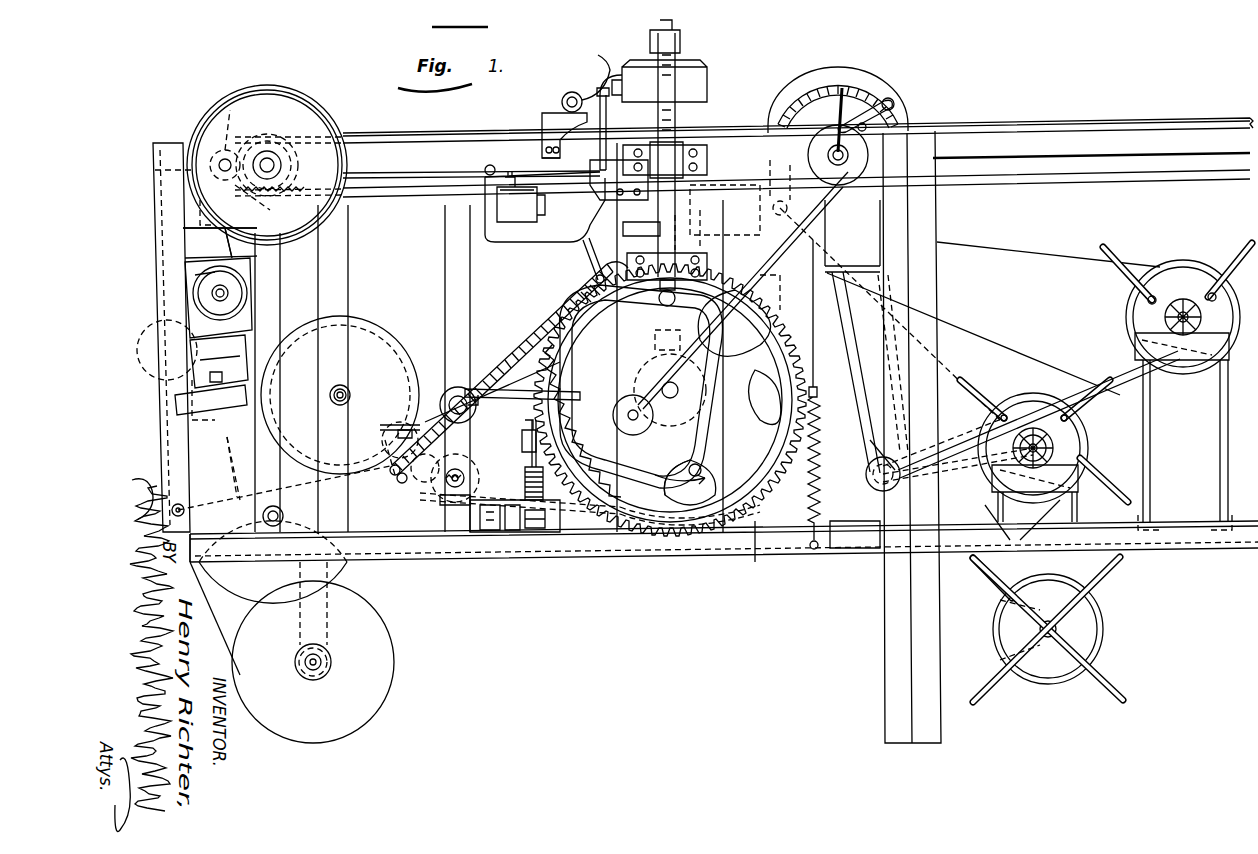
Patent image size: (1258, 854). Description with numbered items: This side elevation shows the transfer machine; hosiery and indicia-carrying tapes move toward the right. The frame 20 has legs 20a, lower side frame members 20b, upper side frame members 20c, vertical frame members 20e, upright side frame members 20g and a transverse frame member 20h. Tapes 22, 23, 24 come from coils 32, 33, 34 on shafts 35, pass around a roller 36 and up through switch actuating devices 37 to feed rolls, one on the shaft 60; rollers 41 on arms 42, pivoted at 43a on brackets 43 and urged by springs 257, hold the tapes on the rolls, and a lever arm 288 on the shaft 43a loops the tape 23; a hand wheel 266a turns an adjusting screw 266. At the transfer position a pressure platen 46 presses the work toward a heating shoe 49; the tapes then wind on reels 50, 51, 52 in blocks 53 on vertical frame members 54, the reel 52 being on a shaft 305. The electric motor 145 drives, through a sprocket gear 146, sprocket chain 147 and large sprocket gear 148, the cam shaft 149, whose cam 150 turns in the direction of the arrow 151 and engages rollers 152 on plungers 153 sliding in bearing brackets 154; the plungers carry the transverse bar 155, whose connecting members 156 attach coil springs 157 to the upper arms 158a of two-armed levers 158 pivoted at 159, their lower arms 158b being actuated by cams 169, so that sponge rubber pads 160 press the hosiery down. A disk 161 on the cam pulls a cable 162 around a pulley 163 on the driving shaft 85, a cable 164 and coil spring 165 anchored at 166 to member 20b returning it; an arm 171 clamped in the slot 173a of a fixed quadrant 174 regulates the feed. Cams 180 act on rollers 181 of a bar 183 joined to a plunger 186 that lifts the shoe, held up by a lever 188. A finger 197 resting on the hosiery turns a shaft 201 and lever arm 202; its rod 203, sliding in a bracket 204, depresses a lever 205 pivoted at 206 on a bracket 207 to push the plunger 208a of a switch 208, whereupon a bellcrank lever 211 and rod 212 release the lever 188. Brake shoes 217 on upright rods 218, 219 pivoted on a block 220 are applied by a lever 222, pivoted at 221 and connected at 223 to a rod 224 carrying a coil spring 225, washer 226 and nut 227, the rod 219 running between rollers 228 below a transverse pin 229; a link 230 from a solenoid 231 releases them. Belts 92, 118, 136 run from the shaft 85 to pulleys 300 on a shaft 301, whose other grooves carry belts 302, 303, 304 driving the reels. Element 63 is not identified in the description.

The frame 20 is at (616, 568).
The legs 20a is at (900, 683).
The lower longitudinal side frame members 20b is at (757, 565).
The upper longitudinal side frame members 20c is at (400, 212).
The vertical frame members 20e is at (352, 305).
The upright side frame members 20g is at (728, 545).
The transverse frame member 20h is at (778, 215).
The tape 22 is at (222, 632).
The tape 23 is at (232, 475).
The tape 24 is at (255, 540).
The coil 32 is at (395, 663).
The coil 33 is at (400, 368).
The coil 34 is at (342, 565).
The rotatable shafts 35 is at (350, 392).
The roller 36 is at (190, 510).
The switch actuating devices 37 is at (221, 357).
The rollers 41 is at (203, 128).
The arms 42 is at (155, 170).
The brackets 43 is at (205, 205).
The pivot shaft 43a is at (200, 225).
The pressure platen 46 is at (625, 67).
The heating shoe 49 is at (760, 185).
The reel 50 is at (1102, 628).
The reel 51 is at (1078, 445).
The reel 52 is at (1128, 305).
The bearing blocks 53 is at (1190, 362).
The vertical frame members 54 is at (1083, 490).
The shaft 60 is at (267, 150).
The pulley 63 is at (318, 118).
The driving shaft 85 is at (835, 150).
The belt 92 is at (867, 363).
The belt 118 is at (862, 440).
The belt 136 is at (860, 455).
The electric motor 145 is at (420, 480).
The sprocket gear 146 is at (500, 530).
The endless sprocket chain 147 is at (532, 356).
The large sprocket gear 148 is at (770, 355).
The cam shaft 149 is at (765, 393).
The cam 150 is at (548, 335).
The arrow 151 is at (680, 469).
The rollers 152 is at (690, 345).
The plungers 153 is at (678, 120).
The bearing brackets 154 is at (685, 148).
The transverse bar 155 is at (680, 45).
The connecting members 156 is at (708, 72).
The coil springs 157 is at (658, 118).
The two-armed levers 158 is at (539, 366).
The upper arms 158a is at (600, 272).
The lower arms 158b is at (660, 512).
The pivot 159 is at (452, 392).
The sponge rubber pads 160 is at (615, 85).
The disk 161 is at (650, 380).
The cable 162 is at (805, 225).
The pulley 163 is at (808, 155).
The cable 164 is at (745, 290).
The coil spring 165 is at (806, 482).
The spring attachment point 166 is at (813, 549).
The cams 169 is at (730, 395).
The arm 171 is at (895, 100).
The slot 173a is at (842, 85).
The fixed quadrant 174 is at (885, 70).
The cams 180 is at (698, 462).
The rollers 181 is at (660, 348).
The bar 183 is at (560, 320).
The plunger 186 is at (700, 365).
The lever 188 is at (694, 228).
The finger 197 is at (595, 88).
The shaft 201 is at (545, 108).
The lever arm 202 is at (565, 97).
The vertical rod 203 is at (600, 158).
The bracket 204 is at (545, 152).
The lever 205 is at (600, 195).
The pivot 206 is at (486, 167).
The bracket 207 is at (500, 242).
The electric switch 208 is at (521, 204).
The plunger 208a is at (500, 190).
The bellcrank lever 211 is at (585, 255).
The rod 212 is at (640, 223).
The brake shoes 217 is at (448, 485).
The upright rod 218 is at (440, 500).
The upright rod 219 is at (512, 532).
The block 220 is at (480, 525).
The pivot 221 is at (430, 482).
The lever 222 is at (522, 436).
The pivotal connection 223 is at (400, 420).
The rod 224 is at (390, 455).
The coil spring 225 is at (403, 428).
The washer 226 is at (398, 478).
The nut 227 is at (390, 416).
The rollers 228 is at (522, 396).
The transverse pin 229 is at (508, 385).
The link 230 is at (545, 475).
The solenoid 231 is at (545, 530).
The springs 257 is at (243, 245).
The adjusting screw 266 is at (212, 296).
The hand wheel 266a is at (190, 270).
The lever arm 288 is at (219, 242).
The pulley 300 is at (855, 535).
The shaft 301 is at (870, 486).
The belt 302 is at (982, 585).
The belt 303 is at (1035, 479).
The belt 304 is at (1050, 372).
The shaft 305 is at (1163, 318).